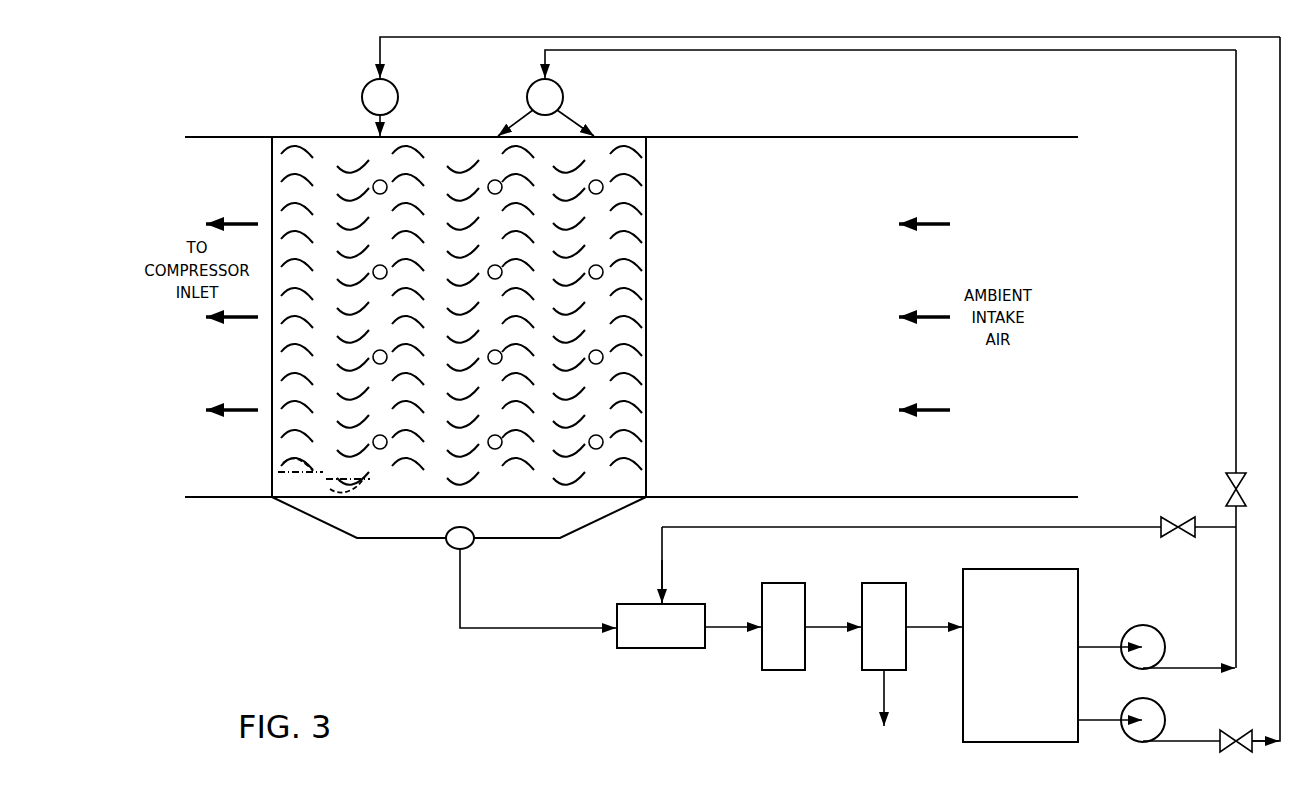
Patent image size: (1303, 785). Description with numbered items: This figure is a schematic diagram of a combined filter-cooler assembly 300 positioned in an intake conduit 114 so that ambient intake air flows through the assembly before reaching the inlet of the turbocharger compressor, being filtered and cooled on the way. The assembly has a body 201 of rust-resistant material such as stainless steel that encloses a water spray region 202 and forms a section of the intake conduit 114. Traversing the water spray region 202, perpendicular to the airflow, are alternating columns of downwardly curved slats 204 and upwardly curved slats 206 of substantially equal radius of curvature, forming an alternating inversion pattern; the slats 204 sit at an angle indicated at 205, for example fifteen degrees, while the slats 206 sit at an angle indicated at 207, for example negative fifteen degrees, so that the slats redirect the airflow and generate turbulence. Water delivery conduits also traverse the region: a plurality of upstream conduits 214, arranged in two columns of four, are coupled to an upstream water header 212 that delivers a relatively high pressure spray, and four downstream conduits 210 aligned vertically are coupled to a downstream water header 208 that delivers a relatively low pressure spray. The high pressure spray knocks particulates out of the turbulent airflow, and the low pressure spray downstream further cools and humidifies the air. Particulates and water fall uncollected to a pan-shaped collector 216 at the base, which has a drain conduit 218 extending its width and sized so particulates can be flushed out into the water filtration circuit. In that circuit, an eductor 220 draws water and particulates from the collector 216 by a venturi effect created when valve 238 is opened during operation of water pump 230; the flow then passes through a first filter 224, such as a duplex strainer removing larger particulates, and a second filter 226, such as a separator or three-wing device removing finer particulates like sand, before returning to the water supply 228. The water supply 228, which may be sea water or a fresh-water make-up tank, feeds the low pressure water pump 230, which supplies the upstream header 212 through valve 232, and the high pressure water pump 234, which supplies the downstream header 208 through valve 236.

The intake conduit 114 is at (935, 137).
The combined filter-cooler assembly 300 is at (281, 72).
The body 201 is at (298, 136).
The water spray region 202 is at (660, 188).
The downwardly curved slats 204 is at (640, 262).
The upwardly curved slats 206 is at (558, 404).
The upstream conduits 214 is at (502, 356).
The downstream conduits 210 is at (373, 357).
The angle of curved slats 204 205 is at (290, 466).
The angle of curved slats 206 207 is at (345, 483).
The downstream water header 208 is at (396, 87).
The upstream water header 212 is at (562, 87).
The collector 216 is at (334, 526).
The drain conduit 218 is at (452, 547).
The eductor 220 is at (648, 636).
The first filter 224 is at (770, 636).
The second filter 226 is at (871, 636).
The water supply 228 is at (1007, 664).
The water pump 230 is at (1159, 630).
The water pump 234 is at (1159, 702).
The valve 232 is at (1229, 473).
The valve 238 is at (1163, 517).
The valve 236 is at (1244, 751).